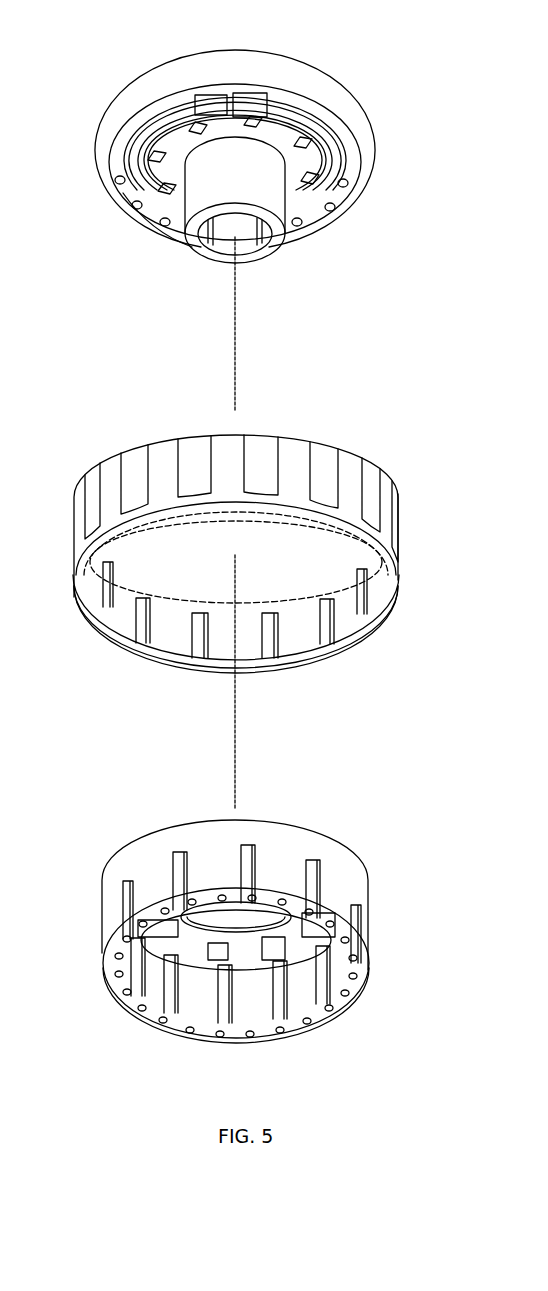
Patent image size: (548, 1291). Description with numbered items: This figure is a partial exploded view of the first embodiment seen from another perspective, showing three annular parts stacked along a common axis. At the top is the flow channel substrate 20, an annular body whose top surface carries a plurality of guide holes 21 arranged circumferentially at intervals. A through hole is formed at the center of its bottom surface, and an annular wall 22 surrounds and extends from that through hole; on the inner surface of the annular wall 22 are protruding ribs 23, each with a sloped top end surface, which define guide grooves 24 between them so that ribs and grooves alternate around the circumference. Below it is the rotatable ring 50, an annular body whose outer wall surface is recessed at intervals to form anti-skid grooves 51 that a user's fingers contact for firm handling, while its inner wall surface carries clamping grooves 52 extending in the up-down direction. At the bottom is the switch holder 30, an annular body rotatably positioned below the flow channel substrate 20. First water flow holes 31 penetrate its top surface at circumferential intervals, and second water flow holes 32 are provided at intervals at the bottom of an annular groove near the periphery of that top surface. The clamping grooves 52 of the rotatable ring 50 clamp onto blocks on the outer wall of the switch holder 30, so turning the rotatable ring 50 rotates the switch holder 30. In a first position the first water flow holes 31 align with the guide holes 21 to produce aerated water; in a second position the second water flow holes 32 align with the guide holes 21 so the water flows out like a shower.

The flow channel substrate 20 is at (243, 50).
The guide holes 21 is at (298, 147).
The annular wall 22 is at (281, 192).
The protruding ribs 23 is at (243, 242).
The guide grooves 24 is at (212, 242).
The rotatable ring 50 is at (320, 453).
The anti-skid grooves 51 is at (257, 443).
The clamping grooves 52 is at (325, 640).
The switch holder 30 is at (268, 822).
The first water flow holes 31 is at (287, 950).
The second water flow holes 32 is at (357, 977).